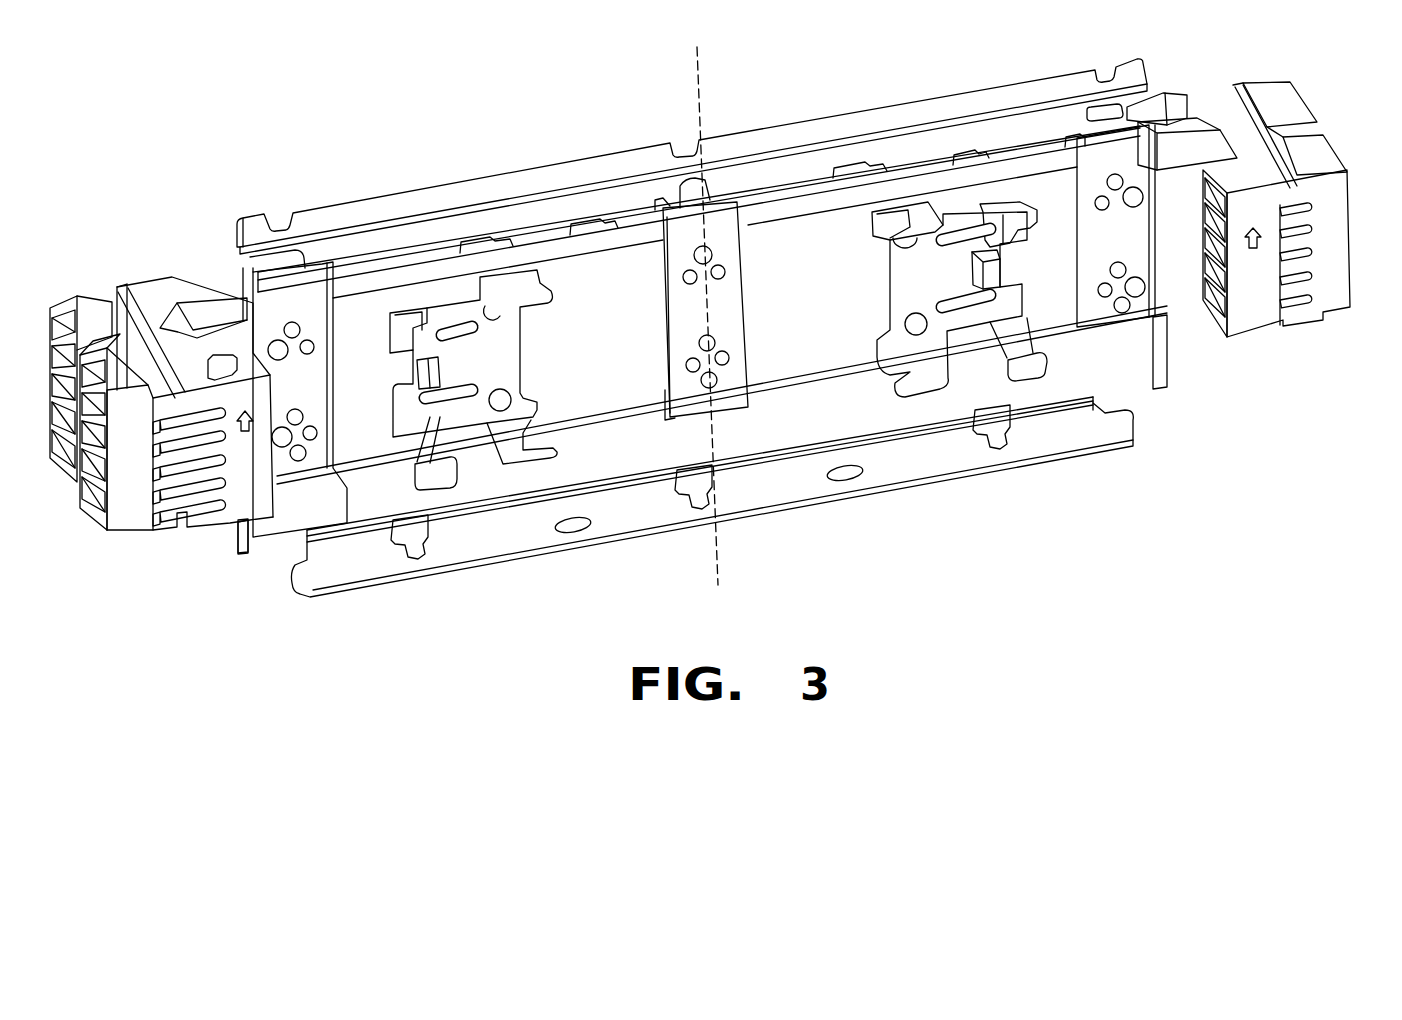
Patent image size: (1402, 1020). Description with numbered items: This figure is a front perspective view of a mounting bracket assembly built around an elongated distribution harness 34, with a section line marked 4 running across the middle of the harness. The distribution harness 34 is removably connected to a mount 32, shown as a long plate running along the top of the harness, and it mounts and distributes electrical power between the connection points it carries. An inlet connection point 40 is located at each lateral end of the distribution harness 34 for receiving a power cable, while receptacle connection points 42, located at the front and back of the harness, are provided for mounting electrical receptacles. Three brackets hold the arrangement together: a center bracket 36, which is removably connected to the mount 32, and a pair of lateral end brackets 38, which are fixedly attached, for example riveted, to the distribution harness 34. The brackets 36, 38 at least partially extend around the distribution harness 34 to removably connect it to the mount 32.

The section line 4- 4 is at (708, 64).
The mount 32 is at (337, 210).
The distribution harness 34 is at (832, 335).
The center bracket 36 is at (727, 370).
The lateral end bracket 38 is at (312, 455).
The inlet connection point 40 is at (72, 490).
The receptacle connection point 42 is at (443, 490).